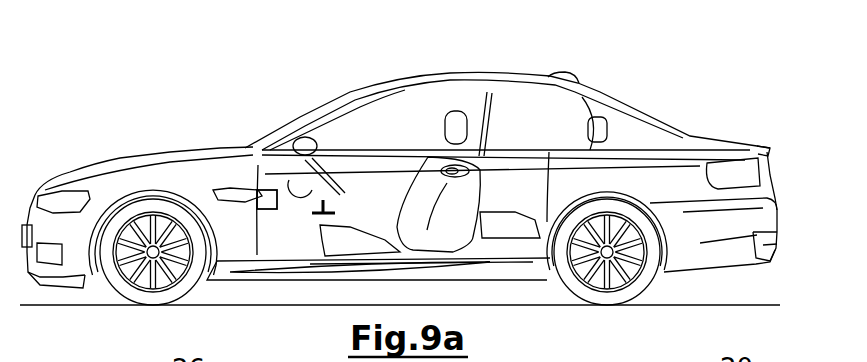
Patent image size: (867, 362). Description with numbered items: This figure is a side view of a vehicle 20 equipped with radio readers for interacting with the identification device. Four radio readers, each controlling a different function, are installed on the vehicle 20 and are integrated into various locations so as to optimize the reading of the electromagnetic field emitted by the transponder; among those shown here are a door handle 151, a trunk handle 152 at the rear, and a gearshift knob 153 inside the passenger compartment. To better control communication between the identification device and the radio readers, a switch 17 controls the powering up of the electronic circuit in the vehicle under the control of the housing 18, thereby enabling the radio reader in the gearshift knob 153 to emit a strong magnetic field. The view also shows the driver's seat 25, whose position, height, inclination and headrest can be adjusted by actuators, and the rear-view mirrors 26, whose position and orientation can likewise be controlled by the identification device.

The vehicle 20 is at (648, 94).
The housing 18 is at (265, 190).
The rear-view mirrors 26 is at (303, 140).
The switch 17 is at (293, 202).
The gearshift knob 153 is at (330, 198).
The driver's seat 25 is at (453, 123).
The door handle 151 is at (470, 172).
The trunk handle 152 is at (760, 147).